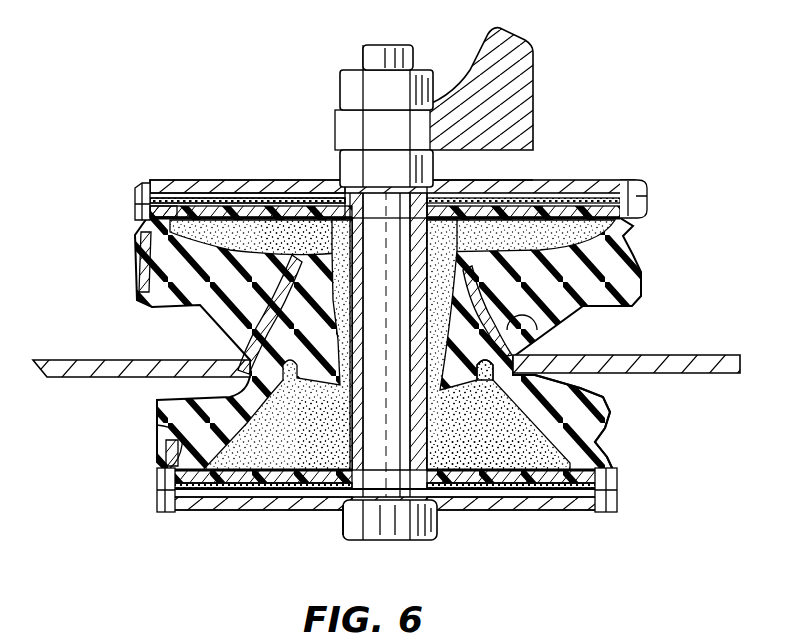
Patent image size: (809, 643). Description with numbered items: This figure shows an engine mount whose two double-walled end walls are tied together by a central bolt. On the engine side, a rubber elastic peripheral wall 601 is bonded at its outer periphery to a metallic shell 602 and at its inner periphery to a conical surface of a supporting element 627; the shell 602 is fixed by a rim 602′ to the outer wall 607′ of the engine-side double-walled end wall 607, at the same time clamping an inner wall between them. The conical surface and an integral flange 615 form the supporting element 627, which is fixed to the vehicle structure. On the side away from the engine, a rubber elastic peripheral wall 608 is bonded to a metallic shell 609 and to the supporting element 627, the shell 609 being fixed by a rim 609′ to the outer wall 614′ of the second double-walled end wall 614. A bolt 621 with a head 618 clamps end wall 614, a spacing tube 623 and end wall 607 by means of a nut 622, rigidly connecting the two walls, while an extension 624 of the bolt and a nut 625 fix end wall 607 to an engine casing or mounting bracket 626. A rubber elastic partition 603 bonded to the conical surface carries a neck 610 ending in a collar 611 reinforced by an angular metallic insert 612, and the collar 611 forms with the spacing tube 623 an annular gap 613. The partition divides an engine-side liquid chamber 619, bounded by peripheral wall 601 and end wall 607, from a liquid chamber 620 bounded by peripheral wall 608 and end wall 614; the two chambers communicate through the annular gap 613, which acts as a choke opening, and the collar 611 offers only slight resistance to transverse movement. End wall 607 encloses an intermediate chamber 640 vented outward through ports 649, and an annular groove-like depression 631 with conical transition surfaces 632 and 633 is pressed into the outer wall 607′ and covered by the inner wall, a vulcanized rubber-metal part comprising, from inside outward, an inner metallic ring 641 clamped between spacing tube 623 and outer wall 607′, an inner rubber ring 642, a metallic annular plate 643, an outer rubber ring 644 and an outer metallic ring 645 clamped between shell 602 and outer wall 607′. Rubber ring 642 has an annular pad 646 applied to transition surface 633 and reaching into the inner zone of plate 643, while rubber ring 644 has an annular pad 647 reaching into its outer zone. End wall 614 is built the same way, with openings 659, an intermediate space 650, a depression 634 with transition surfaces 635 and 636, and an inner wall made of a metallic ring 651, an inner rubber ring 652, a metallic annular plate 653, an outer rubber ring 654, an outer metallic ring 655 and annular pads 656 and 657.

The rubber elastic peripheral wall 601 is at (133, 298).
The metallic shell 602 is at (140, 260).
The rim 602′ is at (135, 187).
The rubber elastic partition 603 is at (250, 340).
The double-walled end wall 607 is at (253, 132).
The outer wall 607′ is at (202, 180).
The rubber elastic peripheral wall 608 is at (613, 415).
The metallic shell 609 is at (603, 445).
The rim 609′ is at (613, 503).
The neck 610 is at (352, 378).
The collar 611 is at (443, 407).
The angular metallic insert 612 is at (470, 427).
The annular gap 613 is at (357, 413).
The double-walled end wall 614 is at (622, 567).
The outer wall 614′ is at (537, 497).
The flange 615 is at (105, 378).
The head 618 is at (392, 523).
The liquid chamber 619 is at (257, 237).
The liquid chamber 620 is at (493, 462).
The bolt 621 is at (389, 483).
The nut 622 is at (350, 178).
The spacing tube 623 is at (410, 302).
The extension 624 is at (383, 58).
The nut 625 is at (350, 85).
The mounting bracket 626 is at (483, 78).
The supporting element 627 is at (582, 339).
The annular groove-like depression 631 is at (477, 180).
The conical transition surface 632 is at (302, 215).
The conical transition surface 633 is at (168, 184).
The depression 634 is at (291, 480).
The transition surface 635 is at (338, 510).
The transition surface 636 is at (208, 500).
The intermediate chamber 640 is at (547, 200).
The inner metallic ring 641 is at (433, 228).
The inner rubber ring 642 is at (338, 226).
The metallic annular plate 643 is at (502, 225).
The outer rubber ring 644 is at (630, 228).
The outer metallic ring 645 is at (633, 216).
The annular pad 646 is at (453, 205).
The annular pad 647 is at (590, 195).
The ports 649 is at (520, 180).
The intermediate space 650 is at (296, 512).
The metallic ring 651 is at (324, 435).
The inner rubber ring 652 is at (467, 480).
The metallic annular plate 653 is at (293, 468).
The outer rubber ring 654 is at (167, 503).
The outer metallic ring 655 is at (163, 470).
The annular pad 656 is at (330, 480).
The annular pad 657 is at (247, 497).
The openings 659 is at (513, 497).